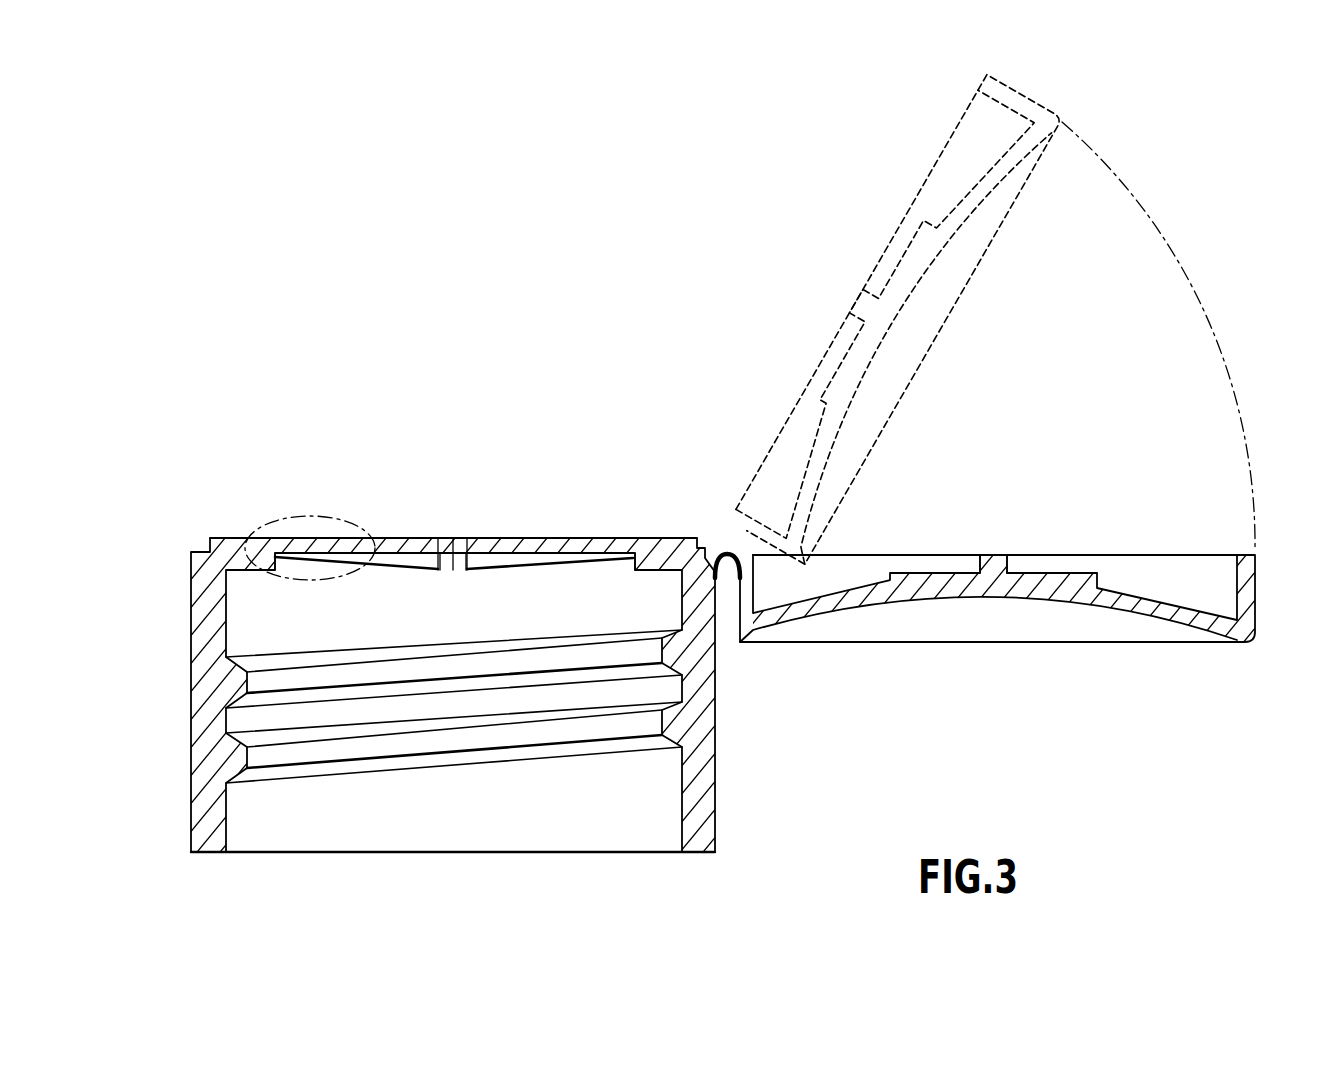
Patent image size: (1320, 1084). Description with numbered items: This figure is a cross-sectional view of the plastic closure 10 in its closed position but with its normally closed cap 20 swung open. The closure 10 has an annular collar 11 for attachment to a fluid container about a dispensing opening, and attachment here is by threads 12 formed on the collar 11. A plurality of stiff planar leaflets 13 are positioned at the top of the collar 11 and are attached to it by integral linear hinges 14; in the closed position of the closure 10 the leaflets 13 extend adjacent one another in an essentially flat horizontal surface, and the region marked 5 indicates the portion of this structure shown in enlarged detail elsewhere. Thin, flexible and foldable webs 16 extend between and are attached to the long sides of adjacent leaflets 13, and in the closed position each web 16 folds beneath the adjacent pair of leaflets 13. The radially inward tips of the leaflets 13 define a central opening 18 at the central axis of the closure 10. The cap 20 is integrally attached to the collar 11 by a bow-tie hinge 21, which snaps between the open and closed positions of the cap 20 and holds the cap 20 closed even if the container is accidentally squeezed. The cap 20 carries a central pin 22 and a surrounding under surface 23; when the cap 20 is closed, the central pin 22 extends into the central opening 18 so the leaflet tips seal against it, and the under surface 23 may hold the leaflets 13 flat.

The detail region of FIG. 5 is at (277, 520).
The plastic closure 10 is at (278, 424).
The annular collar 11 is at (208, 614).
The threads 12 is at (340, 750).
The leaflets 13 is at (383, 548).
The linear hinges 14 is at (613, 550).
The webs 16 is at (443, 572).
The central opening 18 is at (452, 540).
The cap 20 is at (1147, 645).
The bow-tie hinge 21 is at (727, 577).
The central pin 22 is at (988, 552).
The surrounding surface 23 is at (1060, 572).